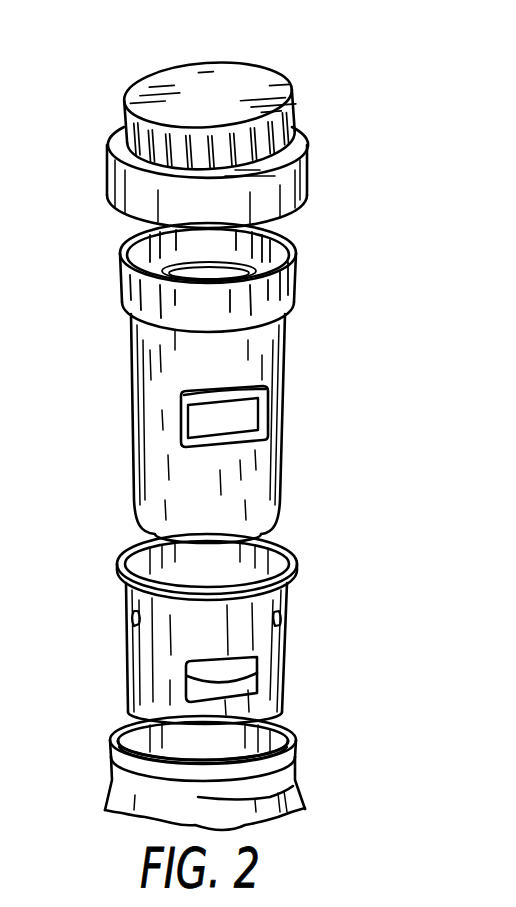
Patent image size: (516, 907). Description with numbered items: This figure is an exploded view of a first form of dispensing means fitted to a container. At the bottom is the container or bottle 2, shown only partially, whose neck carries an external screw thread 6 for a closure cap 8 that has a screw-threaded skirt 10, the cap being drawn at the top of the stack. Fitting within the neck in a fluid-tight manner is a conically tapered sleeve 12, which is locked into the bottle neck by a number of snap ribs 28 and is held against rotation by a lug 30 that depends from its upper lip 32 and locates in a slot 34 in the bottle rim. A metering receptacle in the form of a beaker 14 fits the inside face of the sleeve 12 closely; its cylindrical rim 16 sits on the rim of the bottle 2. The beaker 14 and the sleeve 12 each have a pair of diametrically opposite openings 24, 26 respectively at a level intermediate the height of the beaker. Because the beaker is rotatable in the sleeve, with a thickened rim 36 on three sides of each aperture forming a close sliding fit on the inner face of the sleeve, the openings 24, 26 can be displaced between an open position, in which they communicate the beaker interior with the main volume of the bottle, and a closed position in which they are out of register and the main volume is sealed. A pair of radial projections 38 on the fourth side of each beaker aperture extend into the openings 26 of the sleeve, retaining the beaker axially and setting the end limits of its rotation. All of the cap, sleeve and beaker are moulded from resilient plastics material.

The container or bottle 2 is at (290, 790).
The external screw thread 6 is at (115, 775).
The closure cap 8 is at (247, 75).
The screw-threaded skirt 10 is at (308, 170).
The conically tapered sleeve 12 is at (125, 666).
The beaker 14 is at (133, 490).
The cylindrical rim 16 is at (295, 287).
The openings of the beaker 24 is at (255, 418).
The openings of the sleeve 26 is at (258, 667).
The snap ribs 28 is at (290, 615).
The lug 30 is at (122, 595).
The upper lip 32 is at (290, 547).
The slot 34 is at (118, 753).
The thickened rim 36 is at (250, 384).
The radial projections 38 is at (182, 433).